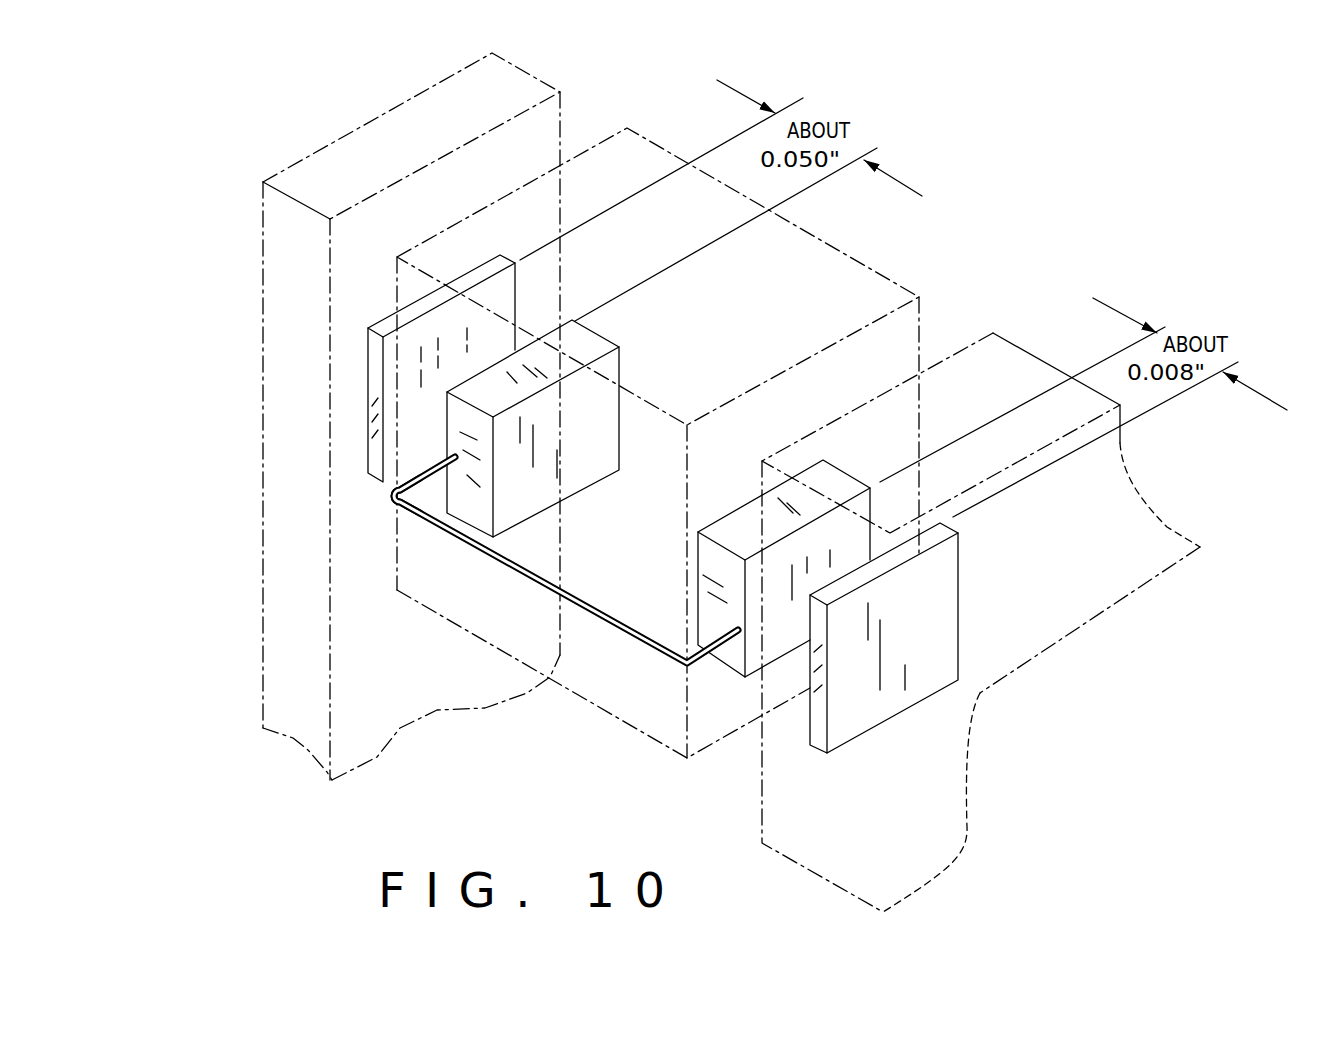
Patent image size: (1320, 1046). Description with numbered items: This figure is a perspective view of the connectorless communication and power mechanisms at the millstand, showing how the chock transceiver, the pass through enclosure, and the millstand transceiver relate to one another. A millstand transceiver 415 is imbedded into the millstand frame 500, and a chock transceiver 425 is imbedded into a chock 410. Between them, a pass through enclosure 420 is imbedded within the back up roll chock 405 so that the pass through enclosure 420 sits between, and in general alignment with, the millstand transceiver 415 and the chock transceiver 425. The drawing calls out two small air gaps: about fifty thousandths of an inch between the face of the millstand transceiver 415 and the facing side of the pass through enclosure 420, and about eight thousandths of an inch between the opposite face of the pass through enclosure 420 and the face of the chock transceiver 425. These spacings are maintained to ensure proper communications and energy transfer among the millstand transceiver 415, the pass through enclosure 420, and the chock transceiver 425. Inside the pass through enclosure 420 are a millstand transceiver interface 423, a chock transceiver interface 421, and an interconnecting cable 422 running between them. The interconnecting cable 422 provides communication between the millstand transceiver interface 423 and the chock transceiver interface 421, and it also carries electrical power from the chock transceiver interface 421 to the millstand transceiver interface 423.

The millstand frame 500 is at (373, 118).
The back up roll chock 405 is at (879, 274).
The chock 410 is at (1010, 344).
The millstand transceiver 415 is at (378, 323).
The pass through enclosure 420 is at (512, 622).
The chock transceiver interface 421 is at (737, 678).
The interconnecting cable 422 is at (447, 535).
The millstand transceiver interface 423 is at (393, 502).
The chock transceiver 425 is at (877, 727).